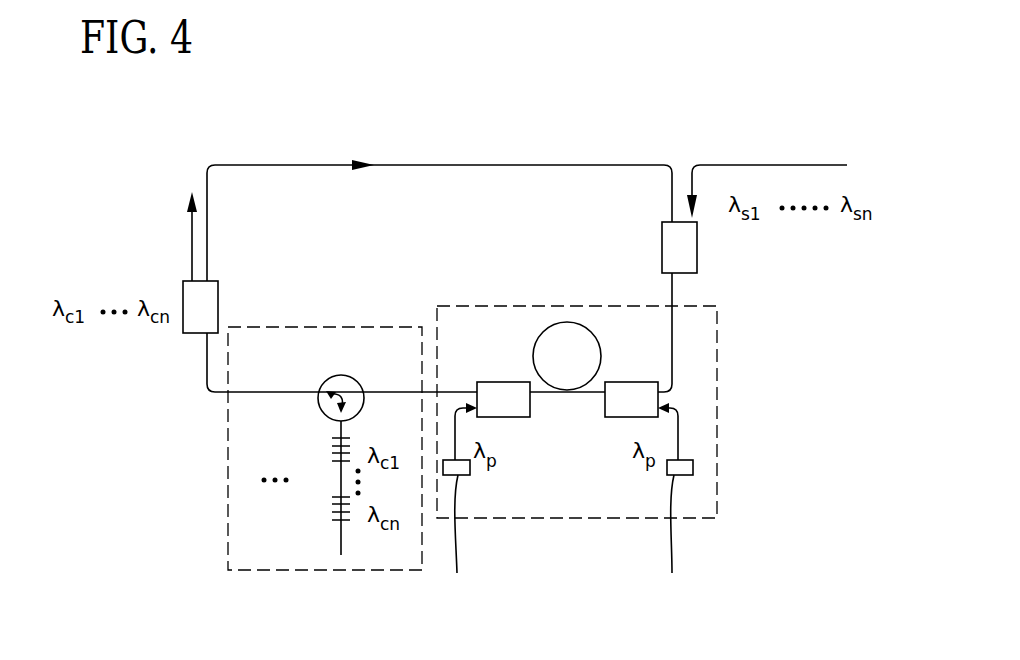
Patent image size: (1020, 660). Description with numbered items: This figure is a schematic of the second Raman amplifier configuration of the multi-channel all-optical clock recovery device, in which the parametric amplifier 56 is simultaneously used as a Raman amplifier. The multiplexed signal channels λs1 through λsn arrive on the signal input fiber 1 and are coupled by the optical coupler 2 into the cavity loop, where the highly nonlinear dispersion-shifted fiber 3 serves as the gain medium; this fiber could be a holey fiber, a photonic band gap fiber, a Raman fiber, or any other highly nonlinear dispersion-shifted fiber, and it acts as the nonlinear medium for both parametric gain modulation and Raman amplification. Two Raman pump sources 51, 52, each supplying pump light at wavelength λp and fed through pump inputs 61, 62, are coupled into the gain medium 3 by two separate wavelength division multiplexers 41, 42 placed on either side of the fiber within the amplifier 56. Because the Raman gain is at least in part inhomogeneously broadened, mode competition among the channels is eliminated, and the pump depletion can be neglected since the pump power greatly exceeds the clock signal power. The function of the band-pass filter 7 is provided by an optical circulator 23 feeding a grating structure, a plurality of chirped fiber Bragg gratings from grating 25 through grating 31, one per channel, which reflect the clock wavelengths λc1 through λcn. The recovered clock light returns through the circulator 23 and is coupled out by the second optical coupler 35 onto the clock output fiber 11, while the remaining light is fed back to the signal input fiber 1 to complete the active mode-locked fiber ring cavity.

The signal input fiber 1 is at (692, 175).
The optical coupler 2 is at (697, 245).
The highly nonlinear dispersion-shifted fiber 3 is at (601, 345).
The band-pass filter 7 is at (310, 570).
The clock output fiber 11 is at (190, 232).
The optical circulator 23 is at (318, 398).
The chirped fiber Bragg grating 25 is at (330, 436).
The chirped fiber Bragg grating 31 is at (262, 512).
The optical coupler 35 is at (185, 298).
The wavelength division multiplexer 41 is at (530, 417).
The wavelength division multiplexer 42 is at (605, 417).
The Raman pump source 51 is at (458, 542).
The Raman pump source 52 is at (673, 542).
The optical amplifier 56 is at (717, 383).
The pump source 61 is at (460, 538).
The pump source 62 is at (675, 538).